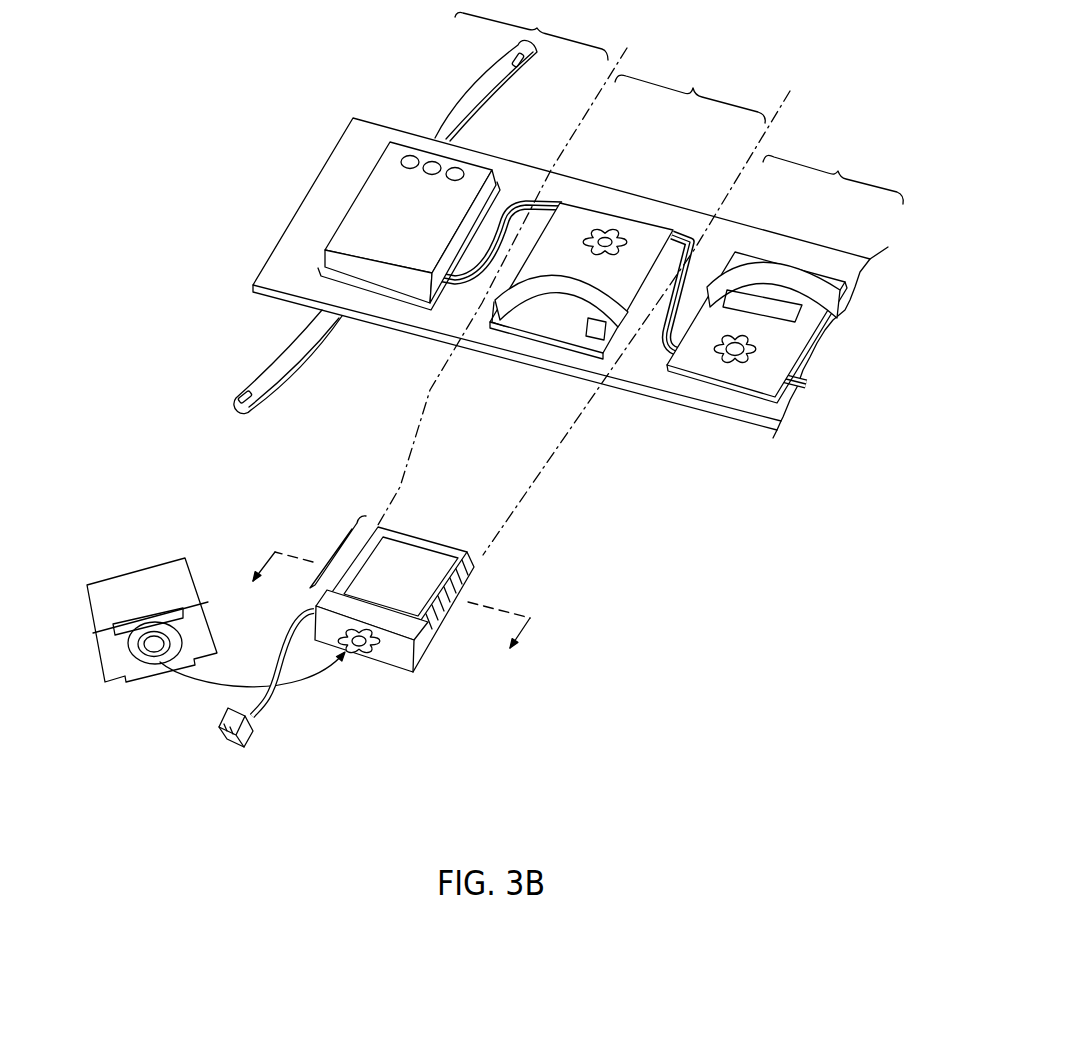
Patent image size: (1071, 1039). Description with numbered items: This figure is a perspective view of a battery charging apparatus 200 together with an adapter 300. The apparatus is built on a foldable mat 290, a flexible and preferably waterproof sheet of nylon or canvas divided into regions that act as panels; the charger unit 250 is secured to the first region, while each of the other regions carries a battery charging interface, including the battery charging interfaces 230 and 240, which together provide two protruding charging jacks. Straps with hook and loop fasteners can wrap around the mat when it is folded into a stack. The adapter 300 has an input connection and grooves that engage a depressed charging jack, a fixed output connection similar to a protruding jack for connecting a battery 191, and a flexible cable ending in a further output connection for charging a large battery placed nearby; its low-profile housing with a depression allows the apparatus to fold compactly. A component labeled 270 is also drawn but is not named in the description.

The battery charging apparatus 200 is at (313, 104).
The battery 191 is at (157, 604).
The battery charging interface 230 is at (798, 351).
The battery charging interface 240 is at (634, 281).
The charger unit 250 is at (418, 237).
The flexible connector 270 is at (826, 302).
The foldable mat 290 is at (262, 300).
The adapter 300 is at (313, 507).